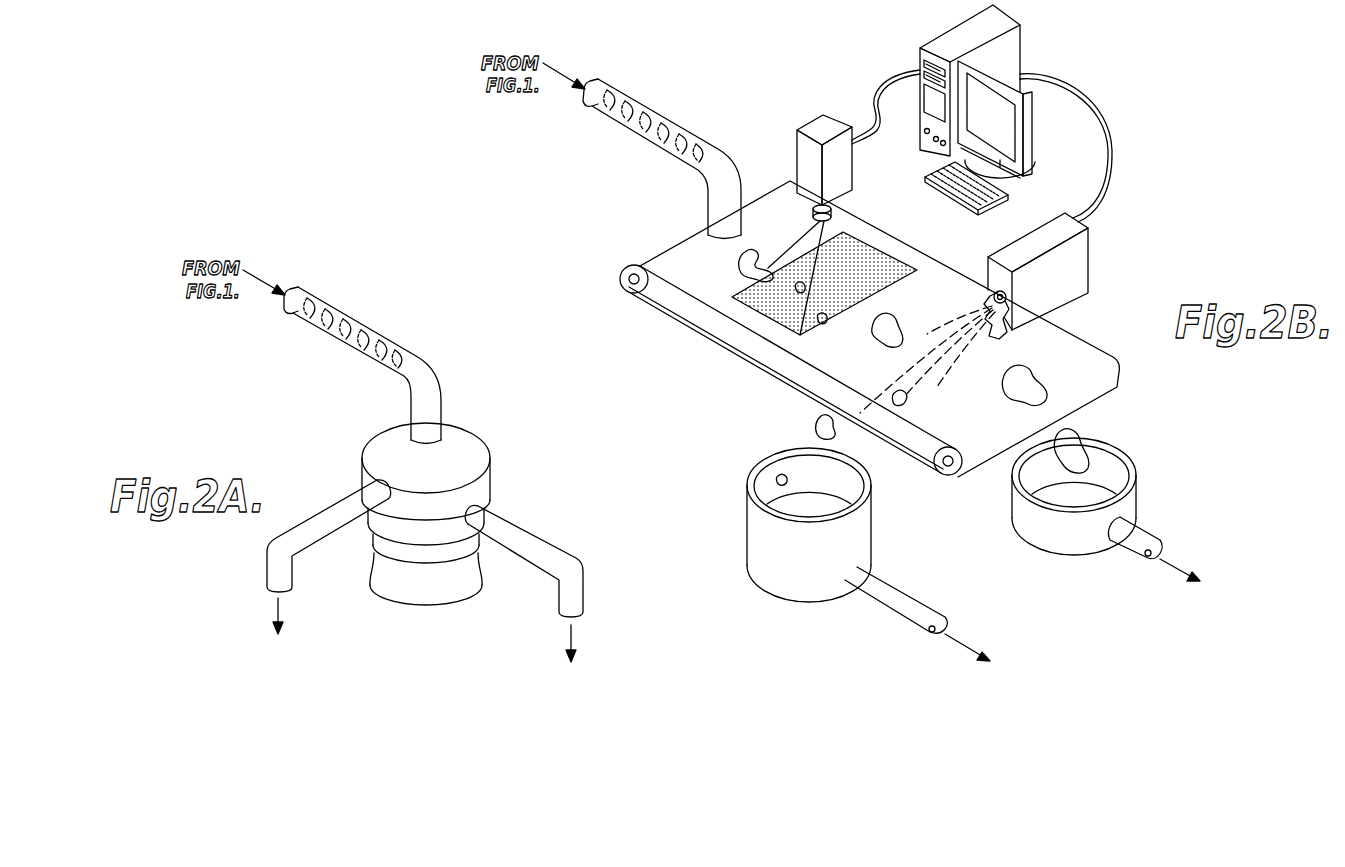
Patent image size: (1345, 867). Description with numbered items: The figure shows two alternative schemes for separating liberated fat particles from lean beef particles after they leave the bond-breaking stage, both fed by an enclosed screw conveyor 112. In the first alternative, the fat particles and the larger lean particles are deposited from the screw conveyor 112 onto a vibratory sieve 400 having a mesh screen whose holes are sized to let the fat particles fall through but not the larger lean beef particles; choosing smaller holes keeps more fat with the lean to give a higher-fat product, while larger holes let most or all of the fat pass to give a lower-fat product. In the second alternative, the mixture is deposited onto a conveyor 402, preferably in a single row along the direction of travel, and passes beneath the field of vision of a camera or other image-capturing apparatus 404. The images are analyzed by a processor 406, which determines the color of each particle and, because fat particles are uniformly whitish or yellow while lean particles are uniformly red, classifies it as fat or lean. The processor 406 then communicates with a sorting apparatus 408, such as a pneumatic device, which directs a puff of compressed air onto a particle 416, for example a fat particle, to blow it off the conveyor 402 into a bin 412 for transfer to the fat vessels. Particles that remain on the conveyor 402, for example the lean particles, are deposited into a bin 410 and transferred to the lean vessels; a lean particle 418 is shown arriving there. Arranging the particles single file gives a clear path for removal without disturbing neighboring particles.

In FIG. 2A, the enclosed screw conveyor 112 is at (370, 322).
In FIG. 2B, the enclosed screw conveyor 112 is at (652, 110).
In FIG. 2A, the vibratory sieve 400 is at (376, 438).
In FIG. 2B, the conveyor 402 is at (658, 312).
In FIG. 2B, the camera or image-capturing apparatus 404 is at (808, 119).
In FIG. 2B, the processor 406 is at (1021, 44).
In FIG. 2B, the sorting apparatus 408 is at (1085, 258).
In FIG. 2B, the bin 410 is at (1134, 458).
In FIG. 2B, the bin 412 is at (748, 474).
In FIG. 2B, the particle 416 is at (816, 427).
In FIG. 2B, the accepted piece 418 is at (1072, 428).